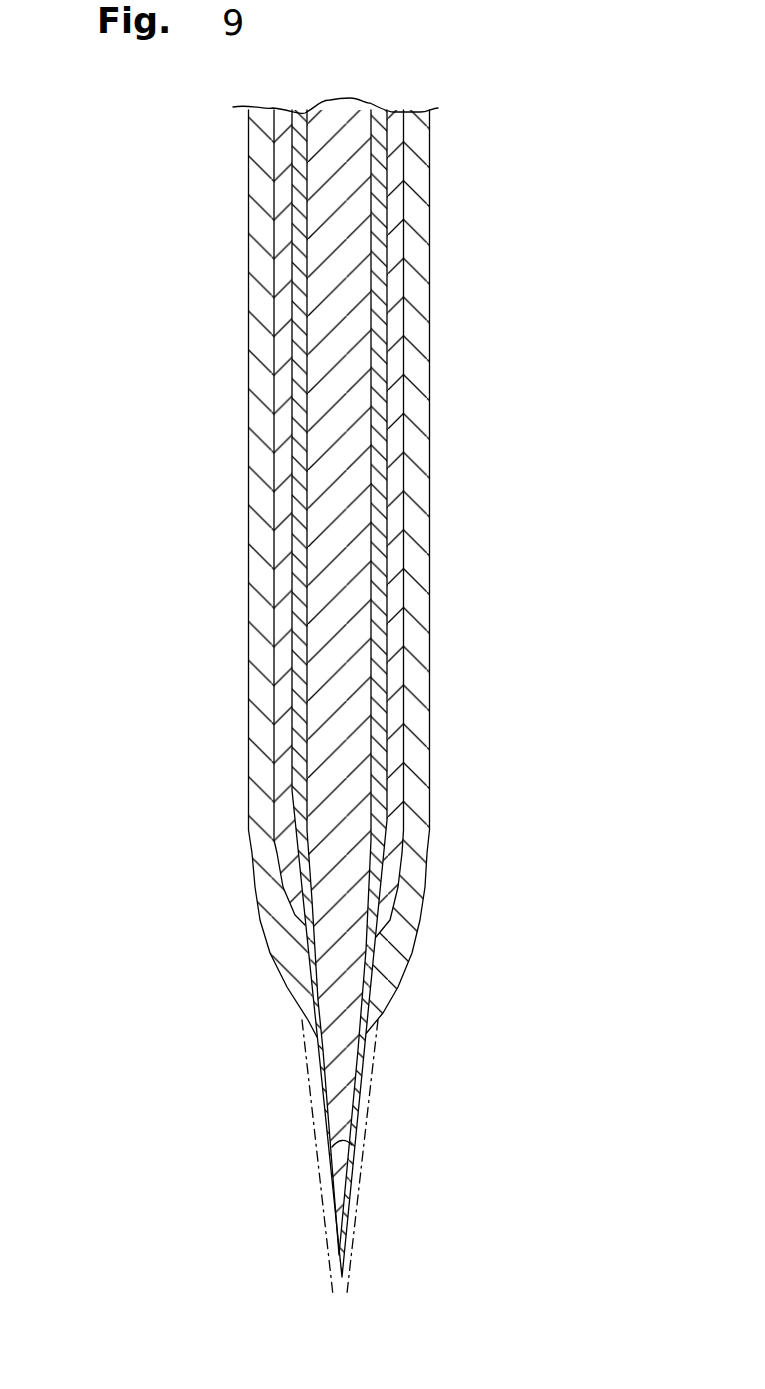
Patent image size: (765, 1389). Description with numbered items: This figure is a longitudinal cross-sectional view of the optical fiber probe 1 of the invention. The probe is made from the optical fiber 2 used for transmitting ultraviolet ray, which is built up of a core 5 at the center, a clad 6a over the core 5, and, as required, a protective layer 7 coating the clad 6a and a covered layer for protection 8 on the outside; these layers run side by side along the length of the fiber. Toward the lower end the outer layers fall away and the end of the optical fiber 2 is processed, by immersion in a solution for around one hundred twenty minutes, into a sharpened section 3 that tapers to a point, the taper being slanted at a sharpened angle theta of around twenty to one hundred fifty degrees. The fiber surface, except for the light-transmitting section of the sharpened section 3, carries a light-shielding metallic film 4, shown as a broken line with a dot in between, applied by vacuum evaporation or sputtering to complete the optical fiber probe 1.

The optical fiber probe 1 is at (440, 517).
The optical fiber 2 is at (132, 365).
The sharpened section 3 is at (365, 1202).
The light-shielding metallic film 4 is at (367, 1107).
The core 5 is at (333, 420).
The clad 6a is at (285, 477).
The protective layer 7 is at (273, 562).
The covered layer for protection 8 is at (268, 637).